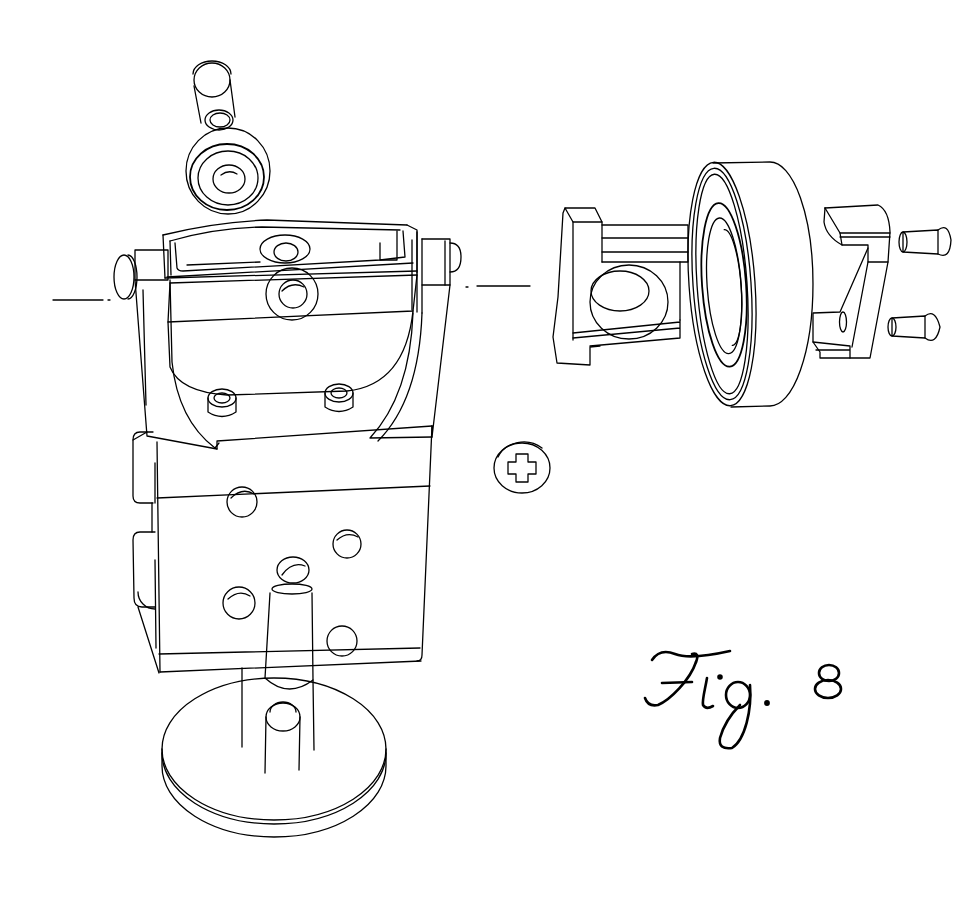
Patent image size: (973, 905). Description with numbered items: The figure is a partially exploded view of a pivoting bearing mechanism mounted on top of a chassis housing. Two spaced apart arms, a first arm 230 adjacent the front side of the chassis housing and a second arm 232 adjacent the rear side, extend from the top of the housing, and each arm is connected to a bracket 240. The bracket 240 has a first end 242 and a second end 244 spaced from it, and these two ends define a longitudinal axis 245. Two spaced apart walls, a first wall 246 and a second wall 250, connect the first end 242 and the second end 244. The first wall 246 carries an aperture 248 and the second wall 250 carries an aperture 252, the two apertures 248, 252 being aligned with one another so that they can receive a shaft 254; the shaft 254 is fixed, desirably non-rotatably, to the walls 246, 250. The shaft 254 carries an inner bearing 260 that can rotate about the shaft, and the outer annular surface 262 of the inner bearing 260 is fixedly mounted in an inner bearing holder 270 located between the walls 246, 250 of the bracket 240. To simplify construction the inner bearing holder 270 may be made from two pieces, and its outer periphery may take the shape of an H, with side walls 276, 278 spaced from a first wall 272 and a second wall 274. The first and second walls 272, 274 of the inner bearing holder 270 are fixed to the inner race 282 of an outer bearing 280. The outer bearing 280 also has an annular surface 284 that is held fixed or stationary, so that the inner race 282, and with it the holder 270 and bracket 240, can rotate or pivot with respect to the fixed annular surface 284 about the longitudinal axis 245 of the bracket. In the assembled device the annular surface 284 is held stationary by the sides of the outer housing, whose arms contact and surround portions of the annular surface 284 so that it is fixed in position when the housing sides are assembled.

The first arm 230 is at (442, 380).
The second arm 232 is at (150, 400).
The bracket 240 is at (377, 308).
The first end 242 is at (405, 238).
The second end 244 is at (173, 237).
The longitudinal axis 245 is at (87, 302).
The first wall 246 is at (247, 313).
The aperture 248 is at (283, 297).
The second wall 250 is at (365, 238).
The aperture 252 is at (287, 250).
The shaft 254 is at (222, 90).
The inner bearing 260 is at (177, 157).
The outer annular surface 262 is at (263, 148).
The inner bearing holder 270 is at (657, 197).
The first wall 272 is at (852, 210).
The second wall 274 is at (583, 250).
The side wall 276 is at (647, 345).
The side wall 278 is at (622, 224).
The outer bearing 280 is at (767, 152).
The inner race 282 is at (723, 337).
The annular surface 284 is at (778, 383).